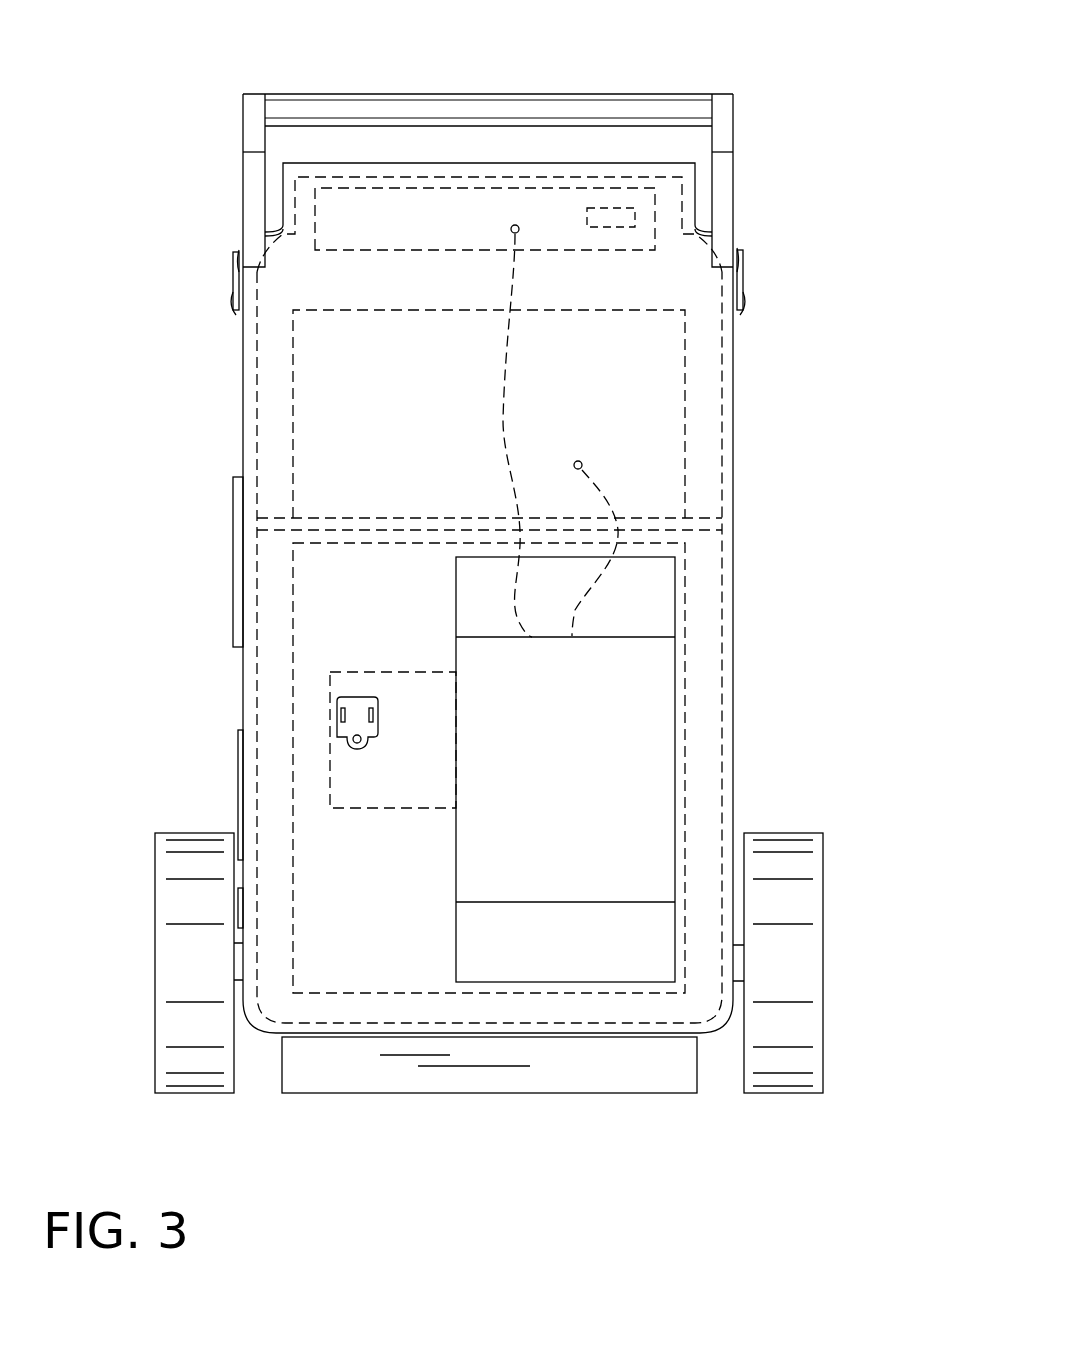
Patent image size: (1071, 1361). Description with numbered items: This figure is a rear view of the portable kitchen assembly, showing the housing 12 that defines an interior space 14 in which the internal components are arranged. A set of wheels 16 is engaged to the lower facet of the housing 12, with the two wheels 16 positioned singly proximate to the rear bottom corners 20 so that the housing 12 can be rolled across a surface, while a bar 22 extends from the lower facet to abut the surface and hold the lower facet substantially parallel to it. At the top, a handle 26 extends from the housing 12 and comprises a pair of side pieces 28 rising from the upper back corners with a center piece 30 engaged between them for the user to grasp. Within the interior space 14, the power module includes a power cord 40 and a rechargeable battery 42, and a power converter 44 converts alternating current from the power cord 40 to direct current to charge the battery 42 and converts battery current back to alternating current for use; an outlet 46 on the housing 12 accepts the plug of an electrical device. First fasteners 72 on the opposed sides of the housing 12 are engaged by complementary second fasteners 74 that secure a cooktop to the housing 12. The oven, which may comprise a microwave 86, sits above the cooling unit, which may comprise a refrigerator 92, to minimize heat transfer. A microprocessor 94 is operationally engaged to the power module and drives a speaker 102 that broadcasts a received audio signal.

The housing 12 is at (242, 443).
The interior space 14 is at (322, 572).
The set of wheels 16 is at (204, 905).
The rear bottom corners 20 is at (264, 1031).
The bar 22 is at (498, 1078).
The handle 26 is at (613, 91).
The side pieces 28 is at (712, 137).
The center piece 30 is at (427, 92).
The power cord 40 is at (357, 712).
The battery 42 is at (592, 709).
The power converter 44 is at (367, 758).
The outlet 46 is at (238, 813).
The first fasteners 72 is at (250, 298).
The second fasteners 74 is at (232, 275).
The microwave 86 is at (646, 411).
The refrigerator 92 is at (322, 628).
The microprocessor 94 is at (642, 207).
The speaker 102 is at (235, 532).